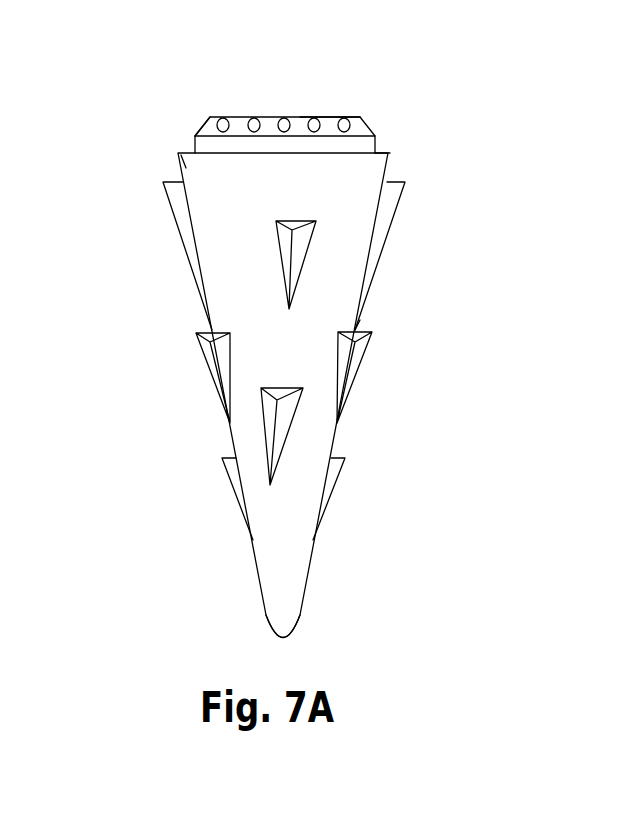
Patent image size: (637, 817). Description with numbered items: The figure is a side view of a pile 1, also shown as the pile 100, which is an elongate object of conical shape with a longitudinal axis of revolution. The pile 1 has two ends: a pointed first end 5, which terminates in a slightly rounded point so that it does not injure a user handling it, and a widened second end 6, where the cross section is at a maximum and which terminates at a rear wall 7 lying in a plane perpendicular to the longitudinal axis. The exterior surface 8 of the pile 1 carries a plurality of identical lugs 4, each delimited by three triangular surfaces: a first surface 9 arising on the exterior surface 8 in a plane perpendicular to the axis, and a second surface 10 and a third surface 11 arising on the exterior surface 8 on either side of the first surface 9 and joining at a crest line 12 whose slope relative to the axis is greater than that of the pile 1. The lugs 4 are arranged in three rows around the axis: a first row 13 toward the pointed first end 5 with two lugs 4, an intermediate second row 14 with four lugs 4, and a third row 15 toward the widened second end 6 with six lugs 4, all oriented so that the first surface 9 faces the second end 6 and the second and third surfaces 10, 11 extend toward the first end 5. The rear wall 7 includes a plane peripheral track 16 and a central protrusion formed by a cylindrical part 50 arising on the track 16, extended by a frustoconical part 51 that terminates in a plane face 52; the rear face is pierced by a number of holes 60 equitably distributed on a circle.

The pile 1 is at (269, 336).
The lug 4 is at (410, 206).
The first end 5 is at (287, 588).
The second end 6 is at (180, 150).
The rear wall 7 is at (372, 121).
The exterior surface 8 is at (228, 292).
The first surface 9 is at (284, 384).
The second surface 10 is at (283, 417).
The third surface 11 is at (272, 440).
The crest line 12 is at (288, 245).
The first row 13 is at (345, 520).
The second row 14 is at (190, 385).
The third row 15 is at (163, 228).
The peripheral track 16 is at (389, 152).
The cylindrical part 50 is at (269, 94).
The frustoconical part 51 is at (207, 117).
The plane face 52 is at (333, 115).
The holes 60 is at (255, 118).
The pile 100 is at (390, 312).